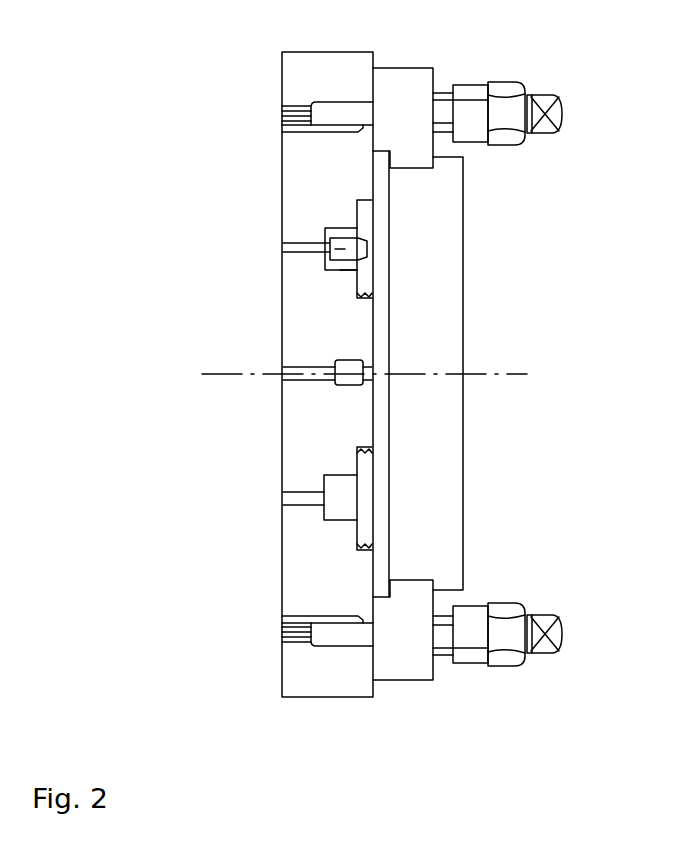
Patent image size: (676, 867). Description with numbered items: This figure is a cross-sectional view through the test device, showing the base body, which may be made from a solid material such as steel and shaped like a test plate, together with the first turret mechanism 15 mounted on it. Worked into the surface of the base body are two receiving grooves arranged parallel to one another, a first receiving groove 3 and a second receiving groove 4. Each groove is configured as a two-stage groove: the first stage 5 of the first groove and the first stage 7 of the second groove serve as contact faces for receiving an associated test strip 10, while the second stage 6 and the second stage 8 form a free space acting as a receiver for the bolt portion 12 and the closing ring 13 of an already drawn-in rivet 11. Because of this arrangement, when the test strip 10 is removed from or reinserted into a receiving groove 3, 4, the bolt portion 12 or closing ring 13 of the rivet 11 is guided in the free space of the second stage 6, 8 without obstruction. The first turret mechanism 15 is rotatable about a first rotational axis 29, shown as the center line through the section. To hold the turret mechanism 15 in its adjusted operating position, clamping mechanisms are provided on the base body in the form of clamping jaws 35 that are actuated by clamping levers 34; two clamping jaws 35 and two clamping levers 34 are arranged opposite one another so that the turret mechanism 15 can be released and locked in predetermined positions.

The first receiving groove 3 is at (361, 269).
The second receiving groove 4 is at (304, 502).
The first stage 5 is at (360, 298).
The second stage 6 is at (352, 272).
The first stage 7 is at (368, 532).
The second stage 8 is at (333, 500).
The test strip 10 is at (355, 217).
The rivet 11 is at (367, 248).
The bolt portion 12 is at (322, 250).
The closing ring 13 is at (343, 262).
The first turret mechanism 15 is at (447, 493).
The first rotational axis 29 is at (513, 373).
The clamping lever 34 is at (550, 95).
The clamping jaw 35 is at (407, 78).